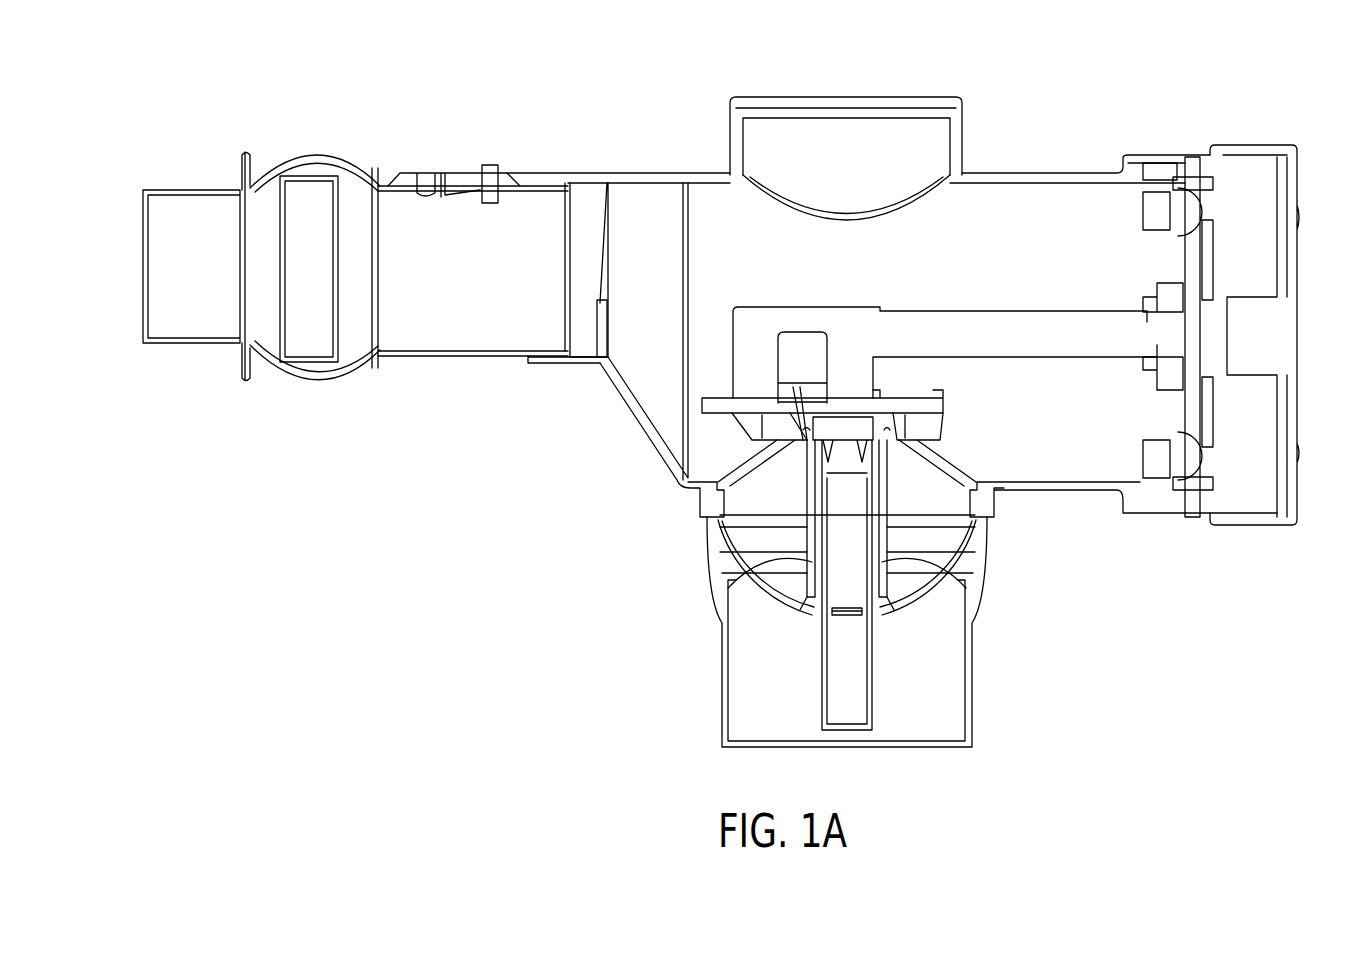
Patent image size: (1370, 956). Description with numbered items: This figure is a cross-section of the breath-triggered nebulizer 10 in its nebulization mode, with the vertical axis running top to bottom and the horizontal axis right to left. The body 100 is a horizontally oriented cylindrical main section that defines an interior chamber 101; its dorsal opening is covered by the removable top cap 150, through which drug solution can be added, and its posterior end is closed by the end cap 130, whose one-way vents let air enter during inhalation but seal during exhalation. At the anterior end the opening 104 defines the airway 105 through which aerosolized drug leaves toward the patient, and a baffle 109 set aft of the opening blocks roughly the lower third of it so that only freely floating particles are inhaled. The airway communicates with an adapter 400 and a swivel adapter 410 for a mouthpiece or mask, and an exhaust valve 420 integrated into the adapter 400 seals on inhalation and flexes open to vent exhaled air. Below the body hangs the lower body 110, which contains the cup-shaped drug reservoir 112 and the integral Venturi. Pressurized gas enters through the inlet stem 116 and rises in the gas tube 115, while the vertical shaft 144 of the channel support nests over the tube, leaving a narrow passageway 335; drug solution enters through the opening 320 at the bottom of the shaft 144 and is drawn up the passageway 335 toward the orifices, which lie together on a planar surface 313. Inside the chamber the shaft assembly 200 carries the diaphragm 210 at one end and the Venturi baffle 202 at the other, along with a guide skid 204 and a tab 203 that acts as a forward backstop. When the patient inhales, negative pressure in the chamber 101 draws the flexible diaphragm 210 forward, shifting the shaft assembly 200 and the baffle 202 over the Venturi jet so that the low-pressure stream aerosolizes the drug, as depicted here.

The nebulizer 10 is at (1076, 89).
The body 100 is at (1085, 495).
The interior chamber 101 is at (1077, 195).
The opening 104 is at (528, 178).
The airway 105 is at (590, 200).
The baffle 109 is at (605, 327).
The lower body 110 is at (720, 635).
The drug reservoir 112 is at (730, 545).
The pressurized gas tube 115 is at (855, 612).
The pressurized gas inlet stem 116 is at (850, 717).
The end cap 130 is at (1300, 398).
The vertical shaft 144 is at (740, 590).
The top cap 150 is at (850, 92).
The shaft assembly 200 is at (1017, 311).
The Venturi baffle 202 is at (843, 412).
The tab 203 is at (946, 408).
The guide skid 204 is at (748, 410).
The diaphragm 210 is at (1203, 464).
The planar surface 313 is at (868, 465).
The opening 320 is at (808, 622).
The passageway 335 is at (815, 510).
The adapter 400 is at (425, 358).
The swivel adapter 410 is at (245, 372).
The exhaust valve 420 is at (427, 185).